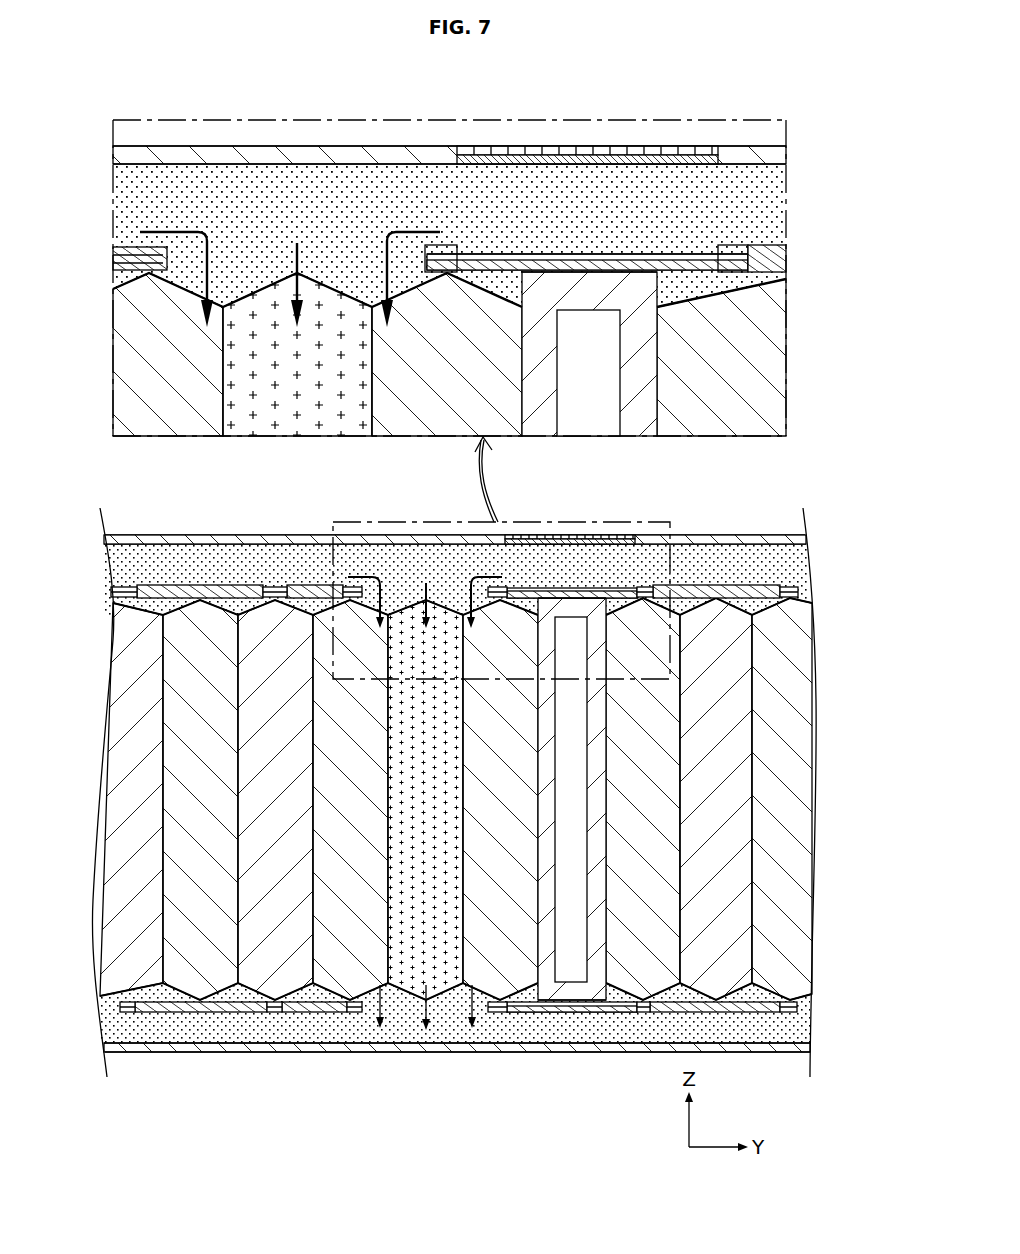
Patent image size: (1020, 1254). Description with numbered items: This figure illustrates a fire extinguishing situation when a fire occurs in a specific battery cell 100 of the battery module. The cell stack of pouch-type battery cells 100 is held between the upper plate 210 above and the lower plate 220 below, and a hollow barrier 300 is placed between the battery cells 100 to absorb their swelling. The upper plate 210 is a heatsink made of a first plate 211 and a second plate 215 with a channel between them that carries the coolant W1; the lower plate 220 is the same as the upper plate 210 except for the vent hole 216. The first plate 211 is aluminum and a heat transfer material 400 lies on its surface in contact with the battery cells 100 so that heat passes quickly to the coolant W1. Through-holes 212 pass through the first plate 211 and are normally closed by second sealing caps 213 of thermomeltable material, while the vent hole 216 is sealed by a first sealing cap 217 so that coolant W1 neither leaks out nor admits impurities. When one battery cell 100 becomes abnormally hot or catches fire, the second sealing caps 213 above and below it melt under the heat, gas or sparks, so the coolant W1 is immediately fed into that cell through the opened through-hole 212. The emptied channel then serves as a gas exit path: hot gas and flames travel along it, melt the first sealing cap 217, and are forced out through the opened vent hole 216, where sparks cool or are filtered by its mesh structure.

The battery cell 100 is at (746, 349).
The upper plate 210 is at (700, 486).
The first plate 211 is at (688, 258).
The through-hole 212 is at (258, 261).
The second sealing cap 213 is at (133, 250).
The second plate 215 is at (755, 155).
The vent hole 216 is at (620, 152).
The first sealing cap 217 is at (566, 160).
The lower plate 220 is at (766, 1061).
The barrier 300 is at (575, 992).
The heat transfer material 400 is at (690, 286).
The coolant W1 is at (154, 195).